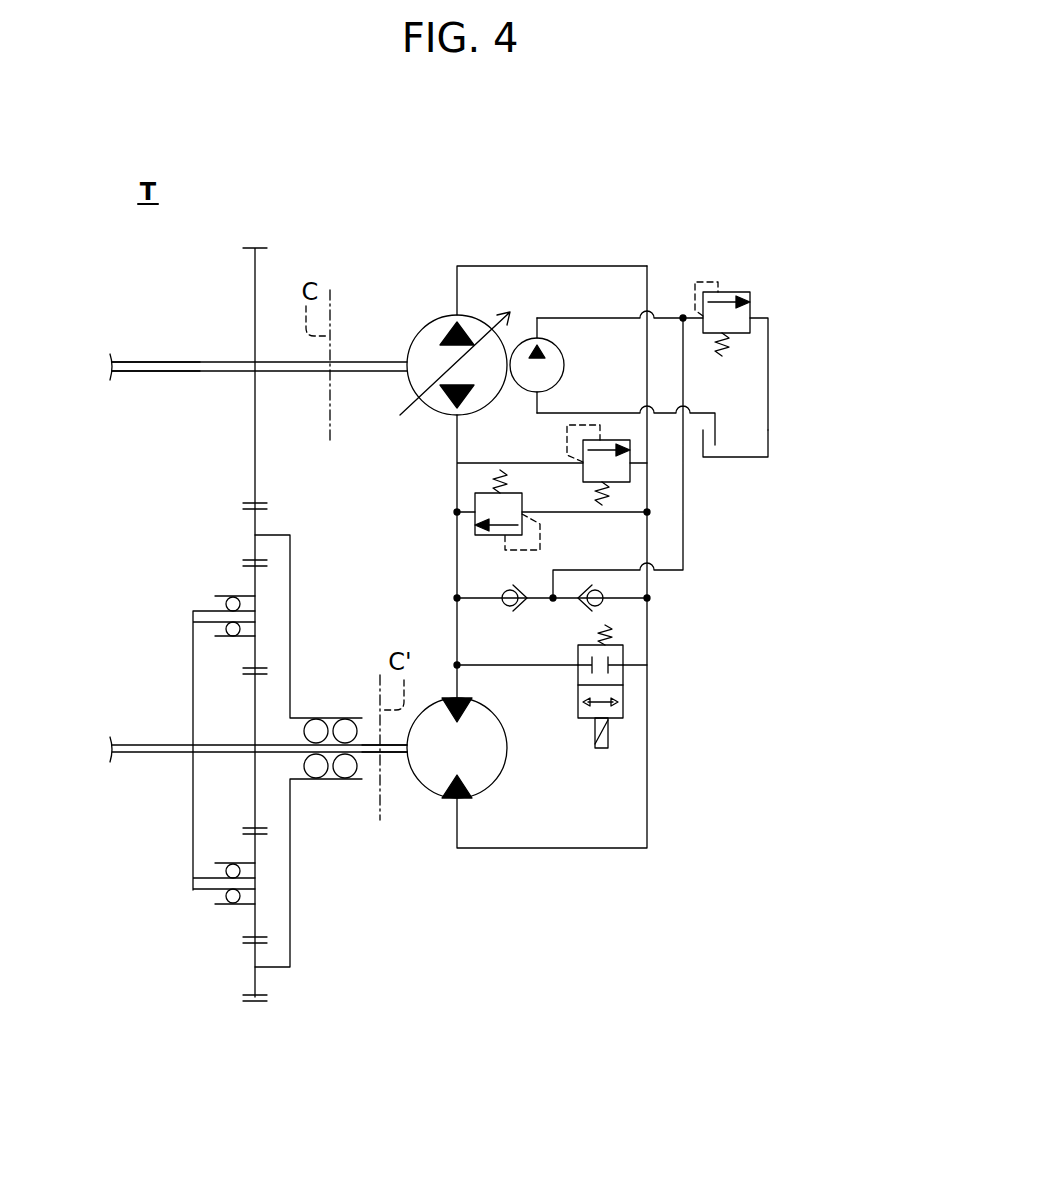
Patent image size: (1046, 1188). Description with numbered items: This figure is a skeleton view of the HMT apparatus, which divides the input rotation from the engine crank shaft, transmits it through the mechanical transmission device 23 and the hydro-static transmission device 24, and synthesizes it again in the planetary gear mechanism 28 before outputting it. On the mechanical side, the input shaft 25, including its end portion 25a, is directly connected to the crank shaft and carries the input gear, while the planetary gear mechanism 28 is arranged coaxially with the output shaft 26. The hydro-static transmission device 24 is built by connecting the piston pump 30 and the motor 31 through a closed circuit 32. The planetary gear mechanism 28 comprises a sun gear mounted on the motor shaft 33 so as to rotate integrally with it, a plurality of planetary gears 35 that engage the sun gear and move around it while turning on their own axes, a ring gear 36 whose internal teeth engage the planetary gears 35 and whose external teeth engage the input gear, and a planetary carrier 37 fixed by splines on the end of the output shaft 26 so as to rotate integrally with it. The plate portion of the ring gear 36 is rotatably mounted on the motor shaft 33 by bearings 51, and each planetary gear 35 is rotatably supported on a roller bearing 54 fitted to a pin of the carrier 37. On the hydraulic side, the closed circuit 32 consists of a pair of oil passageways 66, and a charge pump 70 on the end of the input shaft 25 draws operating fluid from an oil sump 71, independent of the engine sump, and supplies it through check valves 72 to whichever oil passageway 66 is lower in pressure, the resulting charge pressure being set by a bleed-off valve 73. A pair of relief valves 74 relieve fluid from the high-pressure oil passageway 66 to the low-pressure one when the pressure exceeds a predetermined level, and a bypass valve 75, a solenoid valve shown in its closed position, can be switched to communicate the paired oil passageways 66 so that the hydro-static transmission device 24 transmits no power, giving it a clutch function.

The mechanical transmission device 23 is at (294, 262).
The hydro-static transmission device 24 is at (600, 234).
The input shaft 25 is at (258, 346).
The input shaft end portion 25a is at (172, 372).
The output shaft 26 is at (158, 798).
The planetary gear mechanism 28 is at (312, 928).
The piston pump 30 is at (412, 334).
The motor 31 is at (430, 795).
The closed circuit 32 is at (657, 826).
The motor shaft 33 is at (384, 768).
The planetary gears 35 is at (256, 918).
The ring gear 36 is at (290, 577).
The planetary carrier 37 is at (193, 666).
The bearings 51 is at (316, 781).
The roller bearing 54 is at (226, 604).
The oil passageways 66 is at (457, 533).
The charge pump 70 is at (565, 357).
The oil sump 71 is at (771, 451).
The check valves 72 is at (504, 606).
The bleed-off valve 73 is at (750, 300).
The relief valves 74 is at (630, 475).
The bypass valve 75 is at (584, 720).